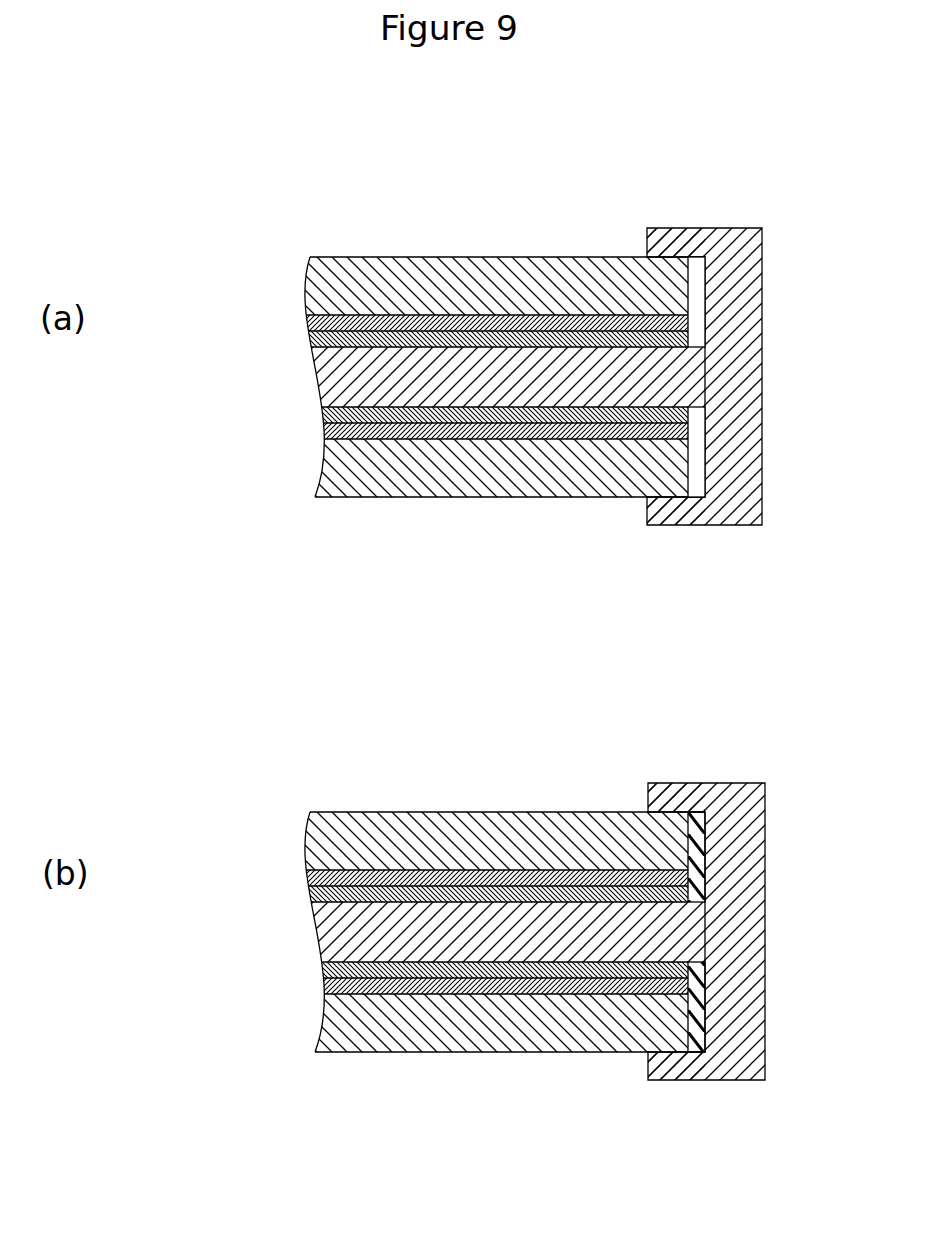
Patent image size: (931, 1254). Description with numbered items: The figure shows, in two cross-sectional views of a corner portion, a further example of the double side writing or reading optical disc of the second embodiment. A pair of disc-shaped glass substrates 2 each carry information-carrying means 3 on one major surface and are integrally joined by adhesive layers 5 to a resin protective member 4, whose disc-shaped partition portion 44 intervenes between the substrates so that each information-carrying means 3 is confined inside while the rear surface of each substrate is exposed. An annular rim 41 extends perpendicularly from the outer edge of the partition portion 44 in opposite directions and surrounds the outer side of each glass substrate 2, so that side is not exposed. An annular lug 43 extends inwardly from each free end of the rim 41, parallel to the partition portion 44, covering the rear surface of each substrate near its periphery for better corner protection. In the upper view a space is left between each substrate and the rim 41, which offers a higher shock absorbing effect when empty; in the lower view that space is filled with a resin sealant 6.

The glass substrate 2 is at (307, 270).
The information-carrying means 3 is at (298, 323).
The protective member 4 is at (286, 376).
The adhesive layer 5 is at (300, 339).
The resin sealant 6 is at (700, 818).
The annular rim 41 is at (750, 316).
The annular lug 43 is at (663, 234).
The partition portion 44 is at (532, 366).